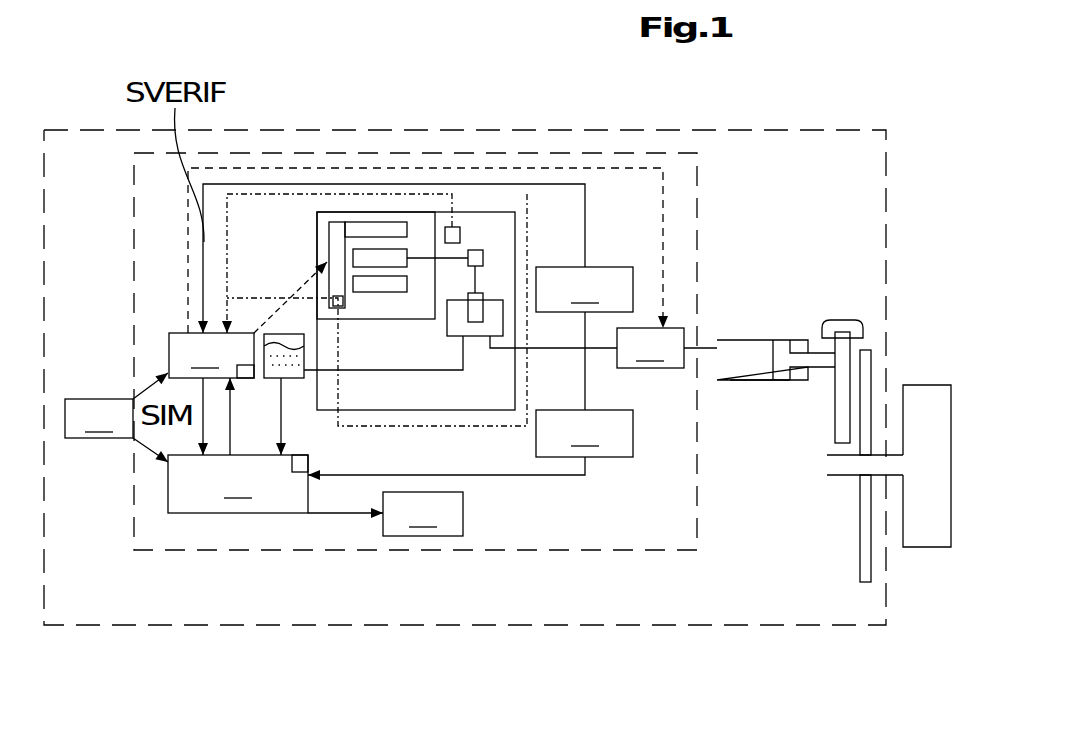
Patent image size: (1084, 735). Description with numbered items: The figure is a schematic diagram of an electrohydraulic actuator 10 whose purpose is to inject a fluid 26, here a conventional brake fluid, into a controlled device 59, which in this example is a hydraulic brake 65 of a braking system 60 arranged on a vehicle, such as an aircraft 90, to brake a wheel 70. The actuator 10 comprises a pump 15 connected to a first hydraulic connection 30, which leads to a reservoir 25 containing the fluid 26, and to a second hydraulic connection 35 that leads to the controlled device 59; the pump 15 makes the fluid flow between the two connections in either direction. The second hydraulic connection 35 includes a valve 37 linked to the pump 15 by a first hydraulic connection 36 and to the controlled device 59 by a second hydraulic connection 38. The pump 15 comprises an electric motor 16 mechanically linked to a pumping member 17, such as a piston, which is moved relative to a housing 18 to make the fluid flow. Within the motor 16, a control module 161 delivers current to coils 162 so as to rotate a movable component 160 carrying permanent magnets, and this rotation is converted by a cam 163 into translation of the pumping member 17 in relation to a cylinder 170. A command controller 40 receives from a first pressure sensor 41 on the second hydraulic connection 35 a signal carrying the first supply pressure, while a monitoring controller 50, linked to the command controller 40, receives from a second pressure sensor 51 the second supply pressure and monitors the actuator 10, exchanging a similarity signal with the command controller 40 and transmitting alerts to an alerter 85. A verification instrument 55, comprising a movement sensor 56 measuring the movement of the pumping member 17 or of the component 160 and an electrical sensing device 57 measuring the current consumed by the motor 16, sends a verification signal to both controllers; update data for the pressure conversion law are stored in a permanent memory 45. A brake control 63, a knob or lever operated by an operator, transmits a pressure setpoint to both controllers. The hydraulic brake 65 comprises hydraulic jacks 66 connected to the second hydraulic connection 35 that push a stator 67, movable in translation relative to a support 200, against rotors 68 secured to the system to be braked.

The electrohydraulic actuator 10 is at (700, 232).
The pump 15 is at (520, 217).
The electric motor 16 is at (325, 208).
The pumping member 17 is at (483, 300).
The housing 18 is at (488, 212).
The reservoir 25 is at (282, 334).
The fluid 26 is at (262, 416).
The first hydraulic connection 30 is at (445, 373).
The second hydraulic connection 35 is at (681, 372).
The first hydraulic connection 36 is at (602, 348).
The valve 37 is at (650, 348).
The second hydraulic connection 38 is at (707, 342).
The command controller 40 is at (195, 436).
The first pressure sensor 41 is at (584, 289).
The permanent memory 45 is at (245, 364).
The monitoring controller 50 is at (238, 484).
The second pressure sensor 51 is at (584, 433).
The verification instrument 55 is at (430, 254).
The movement sensor 56 is at (452, 232).
The electrical sensing device 57 is at (345, 306).
The controlled device 59 is at (787, 408).
The braking system 60 is at (792, 127).
The brake control 63 is at (116, 417).
The hydraulic brake 65 is at (820, 385).
The hydraulic jack 66 is at (760, 381).
The stator 67 is at (832, 326).
The rotor 68 is at (863, 363).
The wheel 70 is at (917, 540).
The alerter 85 is at (385, 514).
The aircraft 90 is at (193, 637).
The movable component 160 is at (397, 252).
The control module 161 is at (338, 222).
The coils 162 is at (372, 228).
The cam 163 is at (483, 256).
The cylinder 170 is at (505, 325).
The support 200 is at (840, 320).